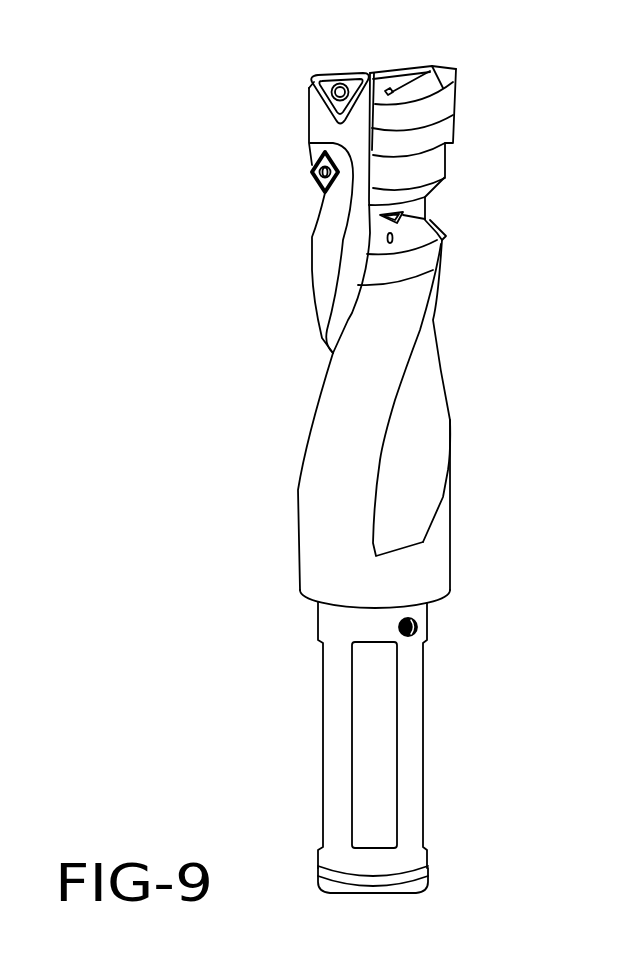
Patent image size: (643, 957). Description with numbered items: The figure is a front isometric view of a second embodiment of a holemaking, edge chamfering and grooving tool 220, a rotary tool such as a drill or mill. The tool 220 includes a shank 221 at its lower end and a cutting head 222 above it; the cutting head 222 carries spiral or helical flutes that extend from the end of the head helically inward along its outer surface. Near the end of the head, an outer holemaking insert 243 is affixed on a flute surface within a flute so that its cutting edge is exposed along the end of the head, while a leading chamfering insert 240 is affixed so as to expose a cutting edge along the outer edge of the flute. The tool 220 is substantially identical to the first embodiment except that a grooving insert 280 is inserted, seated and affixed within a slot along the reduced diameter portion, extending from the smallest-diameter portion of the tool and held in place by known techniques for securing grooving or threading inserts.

The tool 220 is at (317, 465).
The shank 221 is at (422, 710).
The cutting head 222 is at (328, 490).
The leading chamfering insert 240 is at (312, 173).
The outer holemaking insert 243 is at (336, 73).
The grooving insert 280 is at (427, 219).